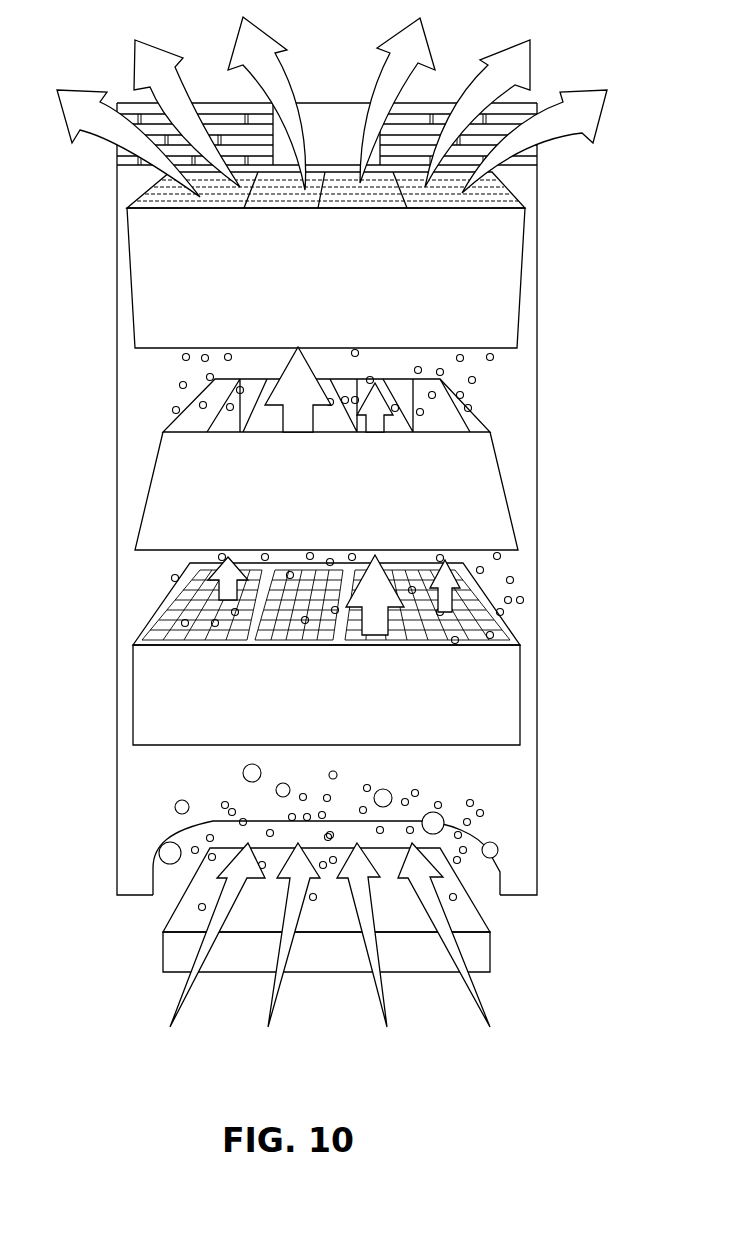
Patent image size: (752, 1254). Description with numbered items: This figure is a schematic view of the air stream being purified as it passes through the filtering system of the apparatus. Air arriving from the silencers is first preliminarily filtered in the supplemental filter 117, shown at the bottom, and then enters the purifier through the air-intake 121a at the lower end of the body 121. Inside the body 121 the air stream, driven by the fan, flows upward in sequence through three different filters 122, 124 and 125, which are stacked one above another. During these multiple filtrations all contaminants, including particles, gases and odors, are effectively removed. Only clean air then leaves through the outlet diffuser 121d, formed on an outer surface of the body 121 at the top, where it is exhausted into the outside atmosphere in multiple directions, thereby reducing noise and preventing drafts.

The body 121 is at (117, 420).
The outlet diffuser 121d is at (116, 160).
The air-intake 121a is at (502, 870).
The filter 125 is at (520, 296).
The filter 124 is at (490, 512).
The filter 122 is at (503, 716).
The supplemental filter 117 is at (163, 945).